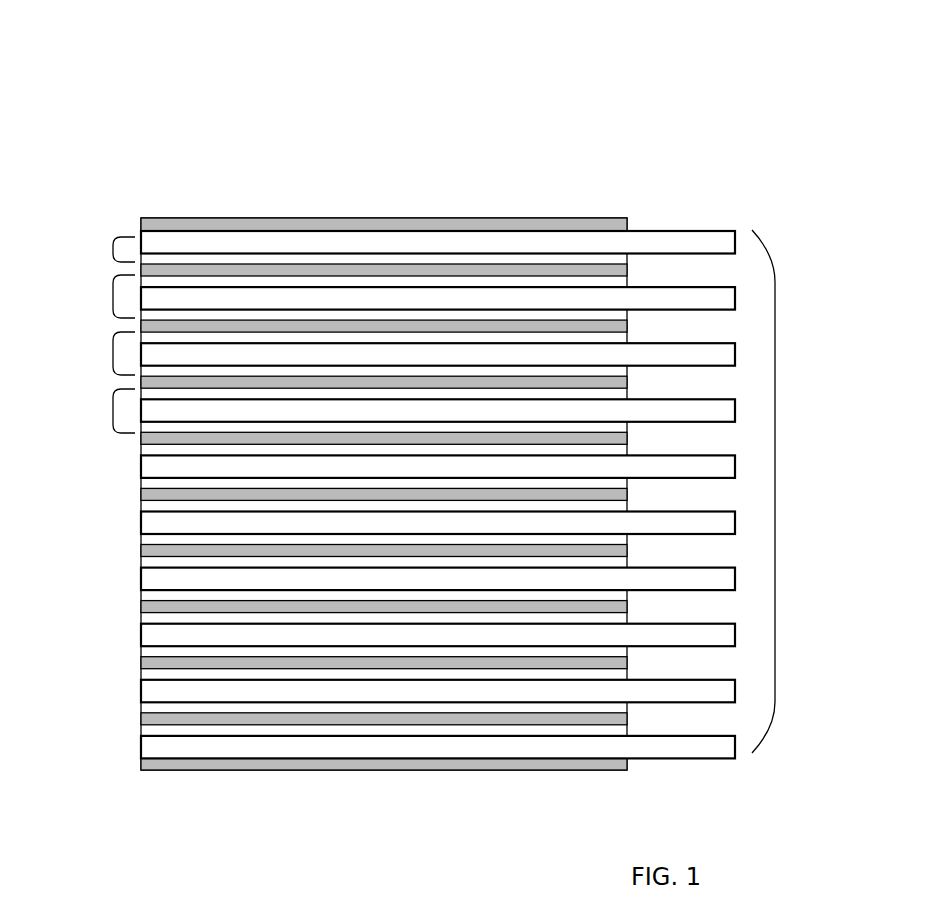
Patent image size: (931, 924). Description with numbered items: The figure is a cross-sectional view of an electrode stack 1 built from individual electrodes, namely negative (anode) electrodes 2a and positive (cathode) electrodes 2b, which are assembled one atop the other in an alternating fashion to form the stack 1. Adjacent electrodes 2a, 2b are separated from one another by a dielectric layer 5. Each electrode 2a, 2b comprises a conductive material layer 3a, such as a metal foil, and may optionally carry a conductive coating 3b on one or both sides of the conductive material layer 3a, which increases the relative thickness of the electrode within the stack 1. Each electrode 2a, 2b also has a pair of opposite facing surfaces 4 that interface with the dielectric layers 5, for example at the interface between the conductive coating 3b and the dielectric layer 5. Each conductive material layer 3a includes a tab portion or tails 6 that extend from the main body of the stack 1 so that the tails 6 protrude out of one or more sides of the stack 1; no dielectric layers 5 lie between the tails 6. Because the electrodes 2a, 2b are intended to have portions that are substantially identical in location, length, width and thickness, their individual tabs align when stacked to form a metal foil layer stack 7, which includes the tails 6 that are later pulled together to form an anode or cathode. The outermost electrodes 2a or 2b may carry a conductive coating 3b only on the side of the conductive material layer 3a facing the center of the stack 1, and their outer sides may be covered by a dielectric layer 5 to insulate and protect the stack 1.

The electrode stack 1 is at (476, 93).
The negative (anode) electrode 2a is at (113, 249).
The positive (cathode) electrode 2b is at (113, 297).
The conductive material layer 3a is at (155, 522).
The conductive coating 3b is at (160, 393).
The opposite facing surfaces 4 is at (286, 275).
The dielectric layer 5 is at (507, 325).
The tails 6 is at (691, 208).
The metal foil layer stack 7 is at (775, 492).